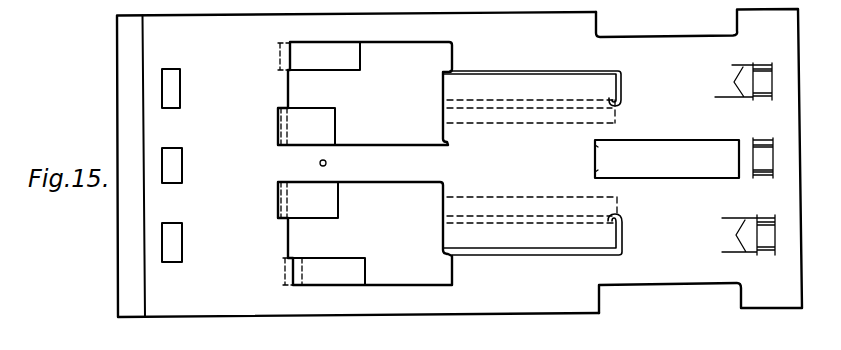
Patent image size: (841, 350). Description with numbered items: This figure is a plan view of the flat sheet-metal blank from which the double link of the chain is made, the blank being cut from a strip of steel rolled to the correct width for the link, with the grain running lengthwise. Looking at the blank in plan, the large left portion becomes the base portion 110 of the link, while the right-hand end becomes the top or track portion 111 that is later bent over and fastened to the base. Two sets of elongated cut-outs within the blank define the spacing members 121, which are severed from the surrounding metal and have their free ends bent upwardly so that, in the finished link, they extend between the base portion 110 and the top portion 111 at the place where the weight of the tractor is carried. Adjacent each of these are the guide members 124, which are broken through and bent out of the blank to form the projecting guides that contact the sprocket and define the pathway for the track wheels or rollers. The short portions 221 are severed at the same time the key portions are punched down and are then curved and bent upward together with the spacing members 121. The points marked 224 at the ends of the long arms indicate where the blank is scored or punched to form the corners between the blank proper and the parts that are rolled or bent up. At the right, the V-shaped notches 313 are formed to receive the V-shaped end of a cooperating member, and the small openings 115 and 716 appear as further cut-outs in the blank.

The base portion 110 is at (240, 300).
The top or track portion 111 is at (563, 298).
The openings 115 is at (181, 98).
The spacing members 121 is at (336, 126).
The projecting guides 124 is at (457, 83).
The severed portions 221 is at (350, 60).
The scored or punched corner points 224 is at (623, 93).
The V-shaped notches 313 is at (743, 67).
The slot insert 716 is at (775, 98).